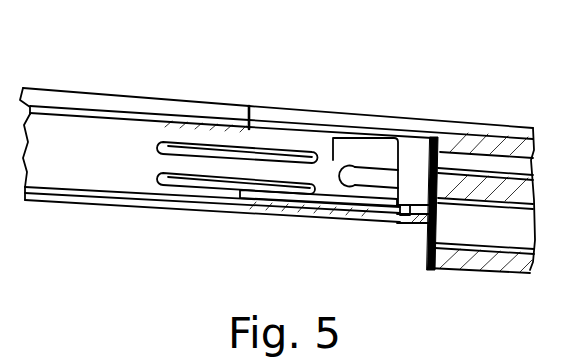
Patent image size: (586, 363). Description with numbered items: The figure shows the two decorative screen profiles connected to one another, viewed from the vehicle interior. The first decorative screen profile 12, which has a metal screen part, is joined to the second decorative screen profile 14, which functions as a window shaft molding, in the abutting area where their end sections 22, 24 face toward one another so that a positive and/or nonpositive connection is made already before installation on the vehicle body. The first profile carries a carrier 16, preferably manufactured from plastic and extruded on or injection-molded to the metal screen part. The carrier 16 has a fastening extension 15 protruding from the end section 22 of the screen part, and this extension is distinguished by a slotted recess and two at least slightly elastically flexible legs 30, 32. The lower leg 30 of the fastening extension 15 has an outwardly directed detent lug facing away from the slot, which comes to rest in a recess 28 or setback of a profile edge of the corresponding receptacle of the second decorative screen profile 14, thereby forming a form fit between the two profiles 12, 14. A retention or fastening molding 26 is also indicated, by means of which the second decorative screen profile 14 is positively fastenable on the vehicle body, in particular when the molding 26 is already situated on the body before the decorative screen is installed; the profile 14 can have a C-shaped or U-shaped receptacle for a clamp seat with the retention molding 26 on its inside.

The first decorative screen profile 12 is at (67, 100).
The end section 22 is at (157, 103).
The end section 24 is at (265, 108).
The second decorative screen profile 14 is at (413, 139).
The leg 32 is at (330, 155).
The retention or fastening molding 26 is at (482, 160).
The carrier 16 is at (95, 181).
The fastening extension 15 is at (277, 189).
The lower leg 30 is at (370, 222).
The recess 28 is at (397, 222).